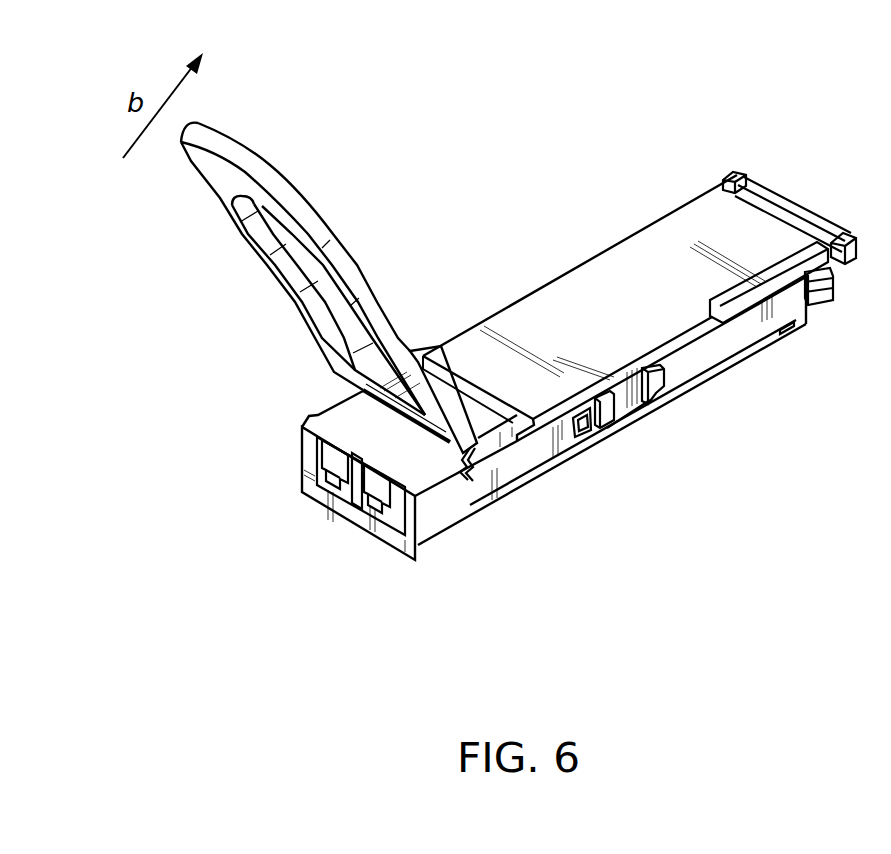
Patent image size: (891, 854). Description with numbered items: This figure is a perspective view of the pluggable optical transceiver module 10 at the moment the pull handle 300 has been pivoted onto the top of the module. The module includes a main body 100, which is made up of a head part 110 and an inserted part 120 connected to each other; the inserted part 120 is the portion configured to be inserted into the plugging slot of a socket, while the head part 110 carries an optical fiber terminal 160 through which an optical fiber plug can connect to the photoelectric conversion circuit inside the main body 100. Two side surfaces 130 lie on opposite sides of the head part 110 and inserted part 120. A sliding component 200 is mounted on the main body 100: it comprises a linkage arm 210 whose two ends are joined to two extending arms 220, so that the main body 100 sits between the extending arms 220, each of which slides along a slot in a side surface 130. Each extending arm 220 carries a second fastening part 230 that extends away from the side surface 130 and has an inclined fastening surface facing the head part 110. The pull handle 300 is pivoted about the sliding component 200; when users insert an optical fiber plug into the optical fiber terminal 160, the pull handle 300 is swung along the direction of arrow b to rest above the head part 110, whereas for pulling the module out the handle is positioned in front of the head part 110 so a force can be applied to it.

The pluggable optical transceiver module 10 is at (592, 193).
The main body 100 is at (612, 524).
The head part 110 is at (485, 513).
The inserted part 120 is at (558, 462).
The side surface 130 is at (741, 339).
The optical fiber terminal 160 is at (330, 466).
The sliding component 200 is at (577, 449).
The linkage arm 210 is at (468, 407).
The extending arm 220 is at (608, 405).
The second fastening part 230 is at (654, 379).
The pull handle 300 is at (257, 163).